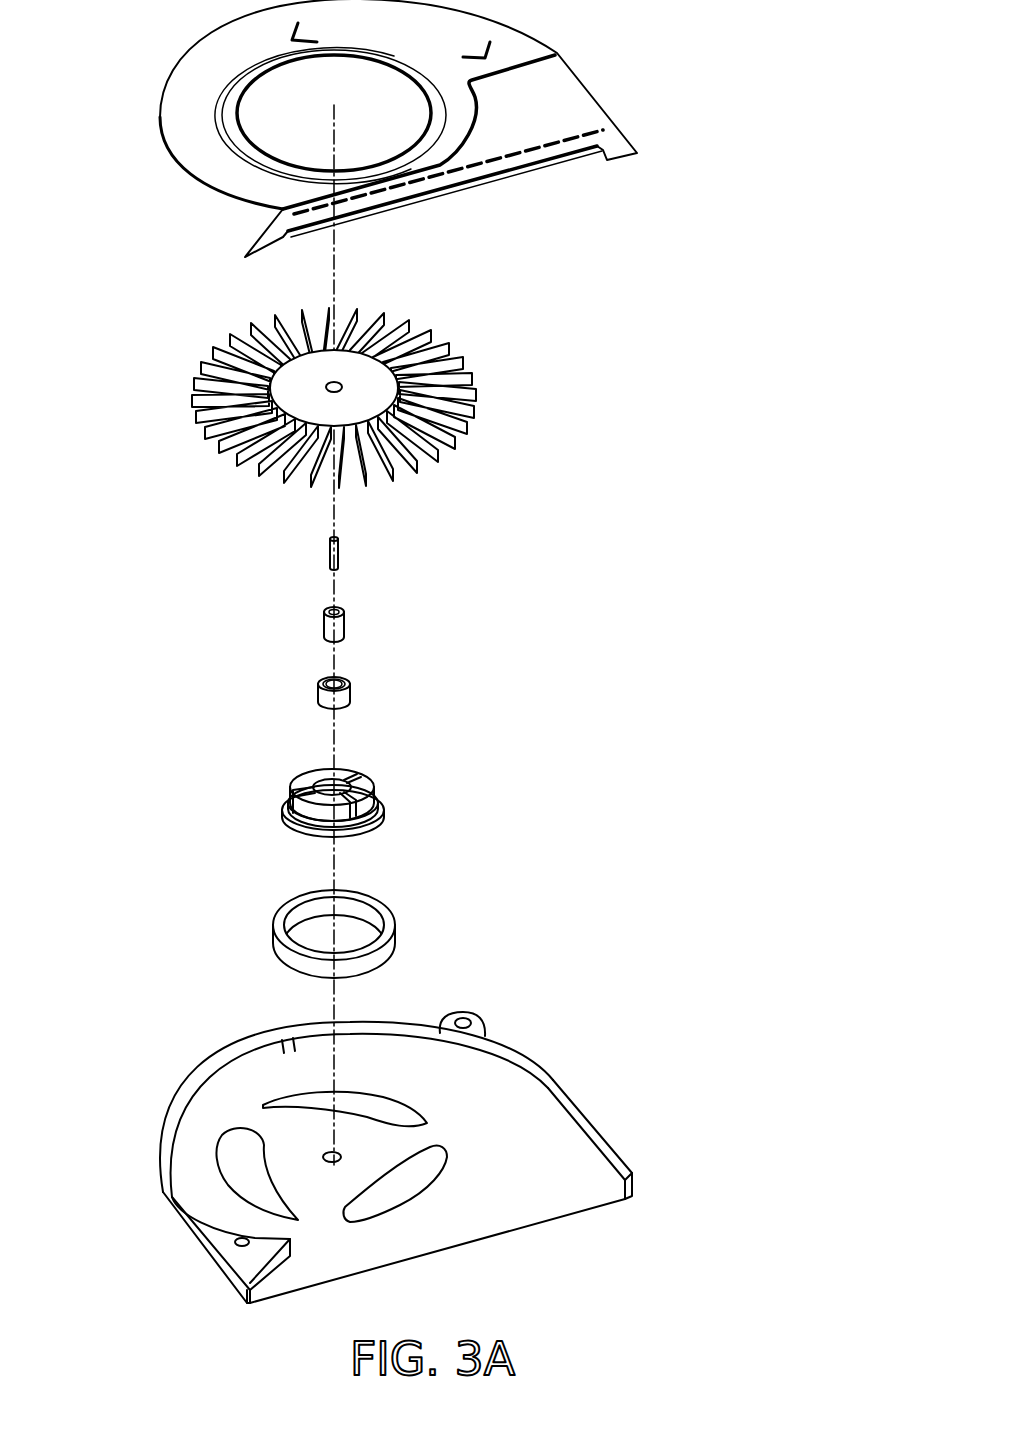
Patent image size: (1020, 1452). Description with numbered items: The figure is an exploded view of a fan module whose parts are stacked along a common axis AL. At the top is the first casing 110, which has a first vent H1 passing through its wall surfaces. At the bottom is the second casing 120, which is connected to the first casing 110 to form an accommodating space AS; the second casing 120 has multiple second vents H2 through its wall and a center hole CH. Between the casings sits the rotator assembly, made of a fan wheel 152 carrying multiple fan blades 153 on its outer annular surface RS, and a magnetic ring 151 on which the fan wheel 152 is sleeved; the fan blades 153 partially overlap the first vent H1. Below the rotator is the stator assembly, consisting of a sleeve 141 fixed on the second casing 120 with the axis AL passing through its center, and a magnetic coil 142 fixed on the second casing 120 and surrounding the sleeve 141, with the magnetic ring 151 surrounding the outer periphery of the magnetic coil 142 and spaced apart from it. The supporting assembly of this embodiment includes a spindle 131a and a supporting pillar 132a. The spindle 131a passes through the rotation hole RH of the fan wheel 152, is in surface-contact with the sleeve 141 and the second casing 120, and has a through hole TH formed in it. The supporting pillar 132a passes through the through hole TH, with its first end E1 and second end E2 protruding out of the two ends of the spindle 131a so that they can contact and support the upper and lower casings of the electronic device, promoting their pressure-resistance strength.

The first casing 110 is at (573, 100).
The second casing 120 is at (555, 1142).
The spindle 131a is at (345, 628).
The supporting pillar 132a is at (338, 553).
The sleeve 141 is at (350, 698).
The magnetic coil 142 is at (383, 790).
The magnetic ring 151 is at (395, 927).
The fan wheel 152 is at (373, 380).
The fan blades 153 is at (467, 403).
The first vent H1 is at (275, 128).
The second vents H2 is at (301, 1219).
The axis AL is at (340, 258).
The rotation hole RH is at (323, 382).
The outer annular surface RS is at (420, 453).
The first end E1 is at (329, 535).
The second end E2 is at (330, 571).
The through hole TH is at (337, 611).
The center hole CH is at (327, 1151).
The accommodating space AS is at (469, 1105).